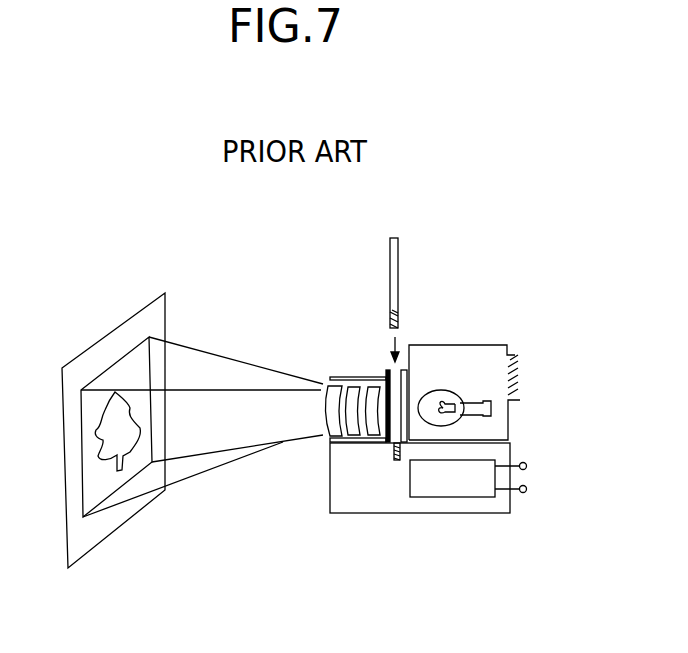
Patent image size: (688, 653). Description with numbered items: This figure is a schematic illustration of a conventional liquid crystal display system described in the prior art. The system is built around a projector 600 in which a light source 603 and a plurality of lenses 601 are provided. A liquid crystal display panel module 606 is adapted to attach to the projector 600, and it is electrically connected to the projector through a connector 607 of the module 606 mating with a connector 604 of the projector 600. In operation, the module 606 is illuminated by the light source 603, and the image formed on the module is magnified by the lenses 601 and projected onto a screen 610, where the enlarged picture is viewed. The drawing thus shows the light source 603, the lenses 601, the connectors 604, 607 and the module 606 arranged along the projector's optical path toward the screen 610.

The projector 600 is at (462, 428).
The lenses 601 is at (352, 385).
The light source 603 is at (437, 390).
The connector 604 is at (398, 460).
The liquid crystal display panel module 606 is at (440, 274).
The connector 607 is at (401, 318).
The screen 610 is at (165, 305).